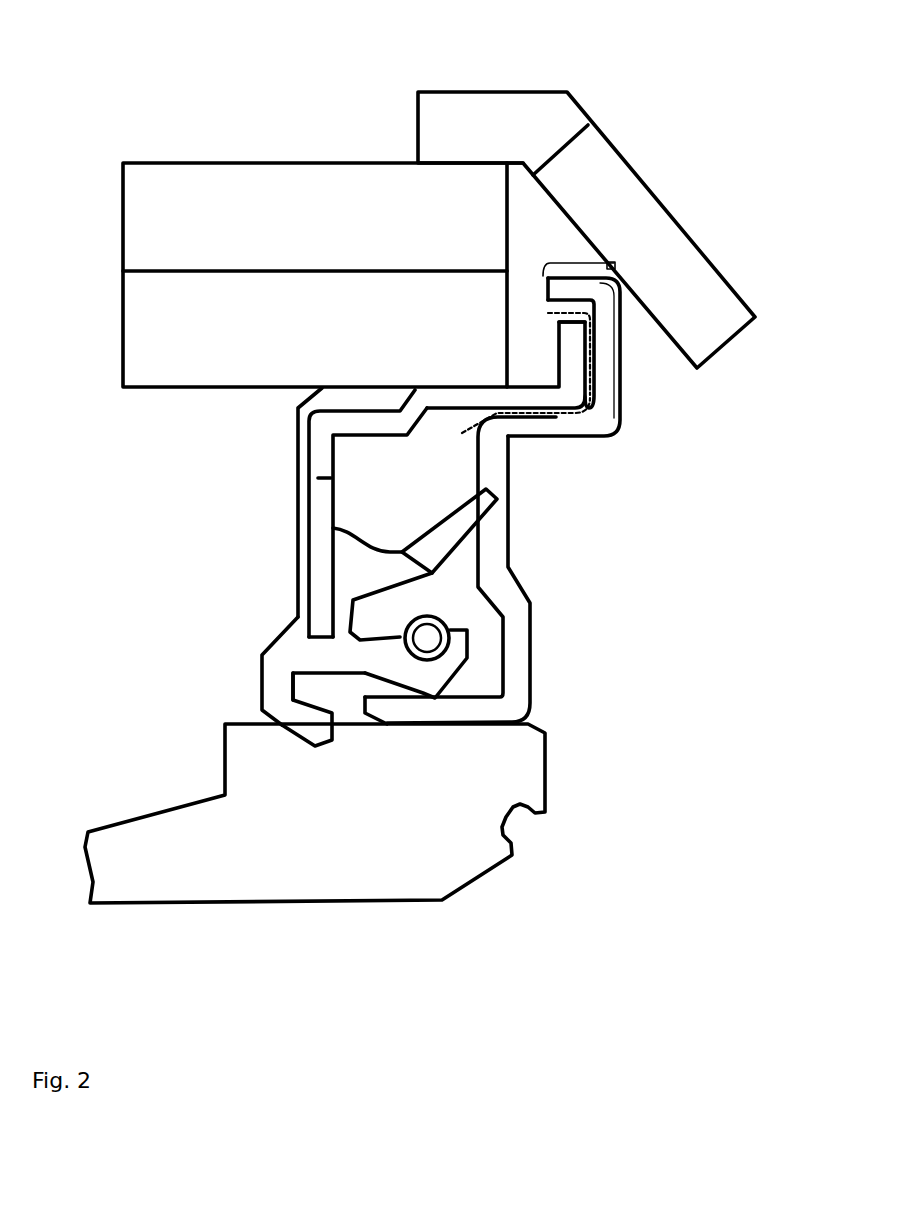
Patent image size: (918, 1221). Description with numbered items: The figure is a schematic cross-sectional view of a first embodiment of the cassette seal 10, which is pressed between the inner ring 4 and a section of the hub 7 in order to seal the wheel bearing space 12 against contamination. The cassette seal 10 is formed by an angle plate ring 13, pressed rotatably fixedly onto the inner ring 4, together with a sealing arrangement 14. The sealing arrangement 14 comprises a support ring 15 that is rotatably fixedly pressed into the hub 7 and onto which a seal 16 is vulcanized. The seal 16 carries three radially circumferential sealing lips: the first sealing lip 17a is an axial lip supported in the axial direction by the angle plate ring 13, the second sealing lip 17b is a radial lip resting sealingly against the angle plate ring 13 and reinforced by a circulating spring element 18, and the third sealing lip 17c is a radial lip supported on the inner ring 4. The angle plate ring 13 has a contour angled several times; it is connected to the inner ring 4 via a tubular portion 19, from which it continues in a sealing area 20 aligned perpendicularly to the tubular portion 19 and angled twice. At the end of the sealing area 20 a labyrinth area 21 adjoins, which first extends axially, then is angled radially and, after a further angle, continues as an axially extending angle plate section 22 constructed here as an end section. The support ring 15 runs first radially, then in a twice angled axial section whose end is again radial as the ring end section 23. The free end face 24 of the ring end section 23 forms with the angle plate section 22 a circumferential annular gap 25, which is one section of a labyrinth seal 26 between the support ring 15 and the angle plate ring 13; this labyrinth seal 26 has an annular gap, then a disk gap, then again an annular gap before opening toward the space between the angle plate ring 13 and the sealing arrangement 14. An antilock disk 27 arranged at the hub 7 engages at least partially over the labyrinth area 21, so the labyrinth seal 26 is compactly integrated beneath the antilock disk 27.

The inner ring 4 is at (453, 868).
The hub 7 is at (270, 190).
The cassette seal 10 is at (668, 605).
The wheel bearing space 12 is at (120, 569).
The angle plate ring 13 is at (517, 618).
The sealing arrangement 14 is at (292, 522).
The support ring 15 is at (327, 424).
The seal 16 is at (275, 687).
The first sealing lip 17a is at (457, 528).
The second sealing lip 17b is at (435, 683).
The third sealing lip 17c is at (313, 727).
The spring element 18 is at (428, 637).
The tubular portion 19 is at (439, 713).
The sealing area 20 is at (540, 717).
The labyrinth area 21 is at (622, 276).
The angle plate section 22 is at (572, 263).
The ring end section 23 is at (551, 319).
The free end face 24 is at (572, 323).
The annular gap 25 is at (538, 312).
The labyrinth seal 26 is at (462, 433).
The antilock disk 27 is at (713, 305).